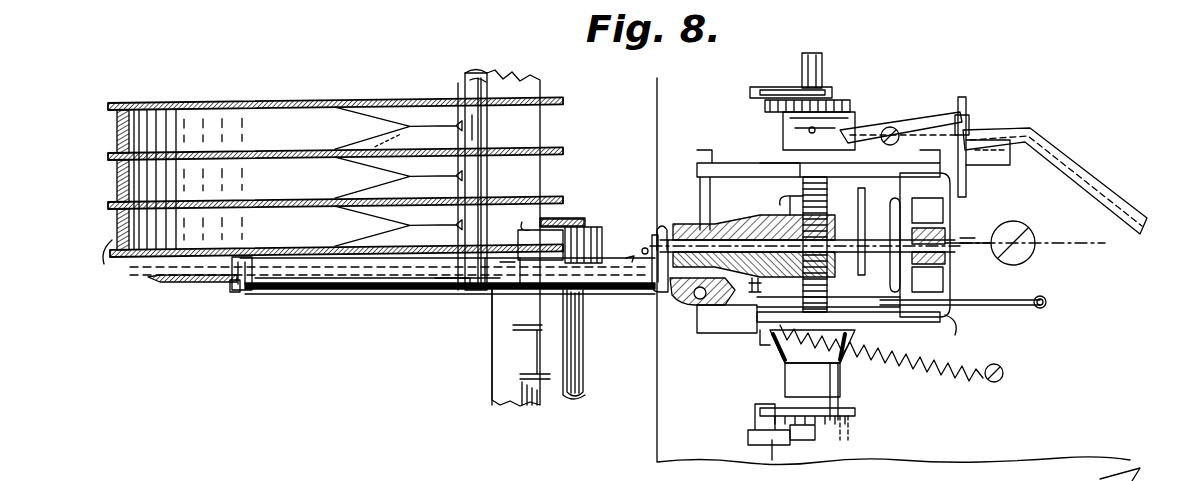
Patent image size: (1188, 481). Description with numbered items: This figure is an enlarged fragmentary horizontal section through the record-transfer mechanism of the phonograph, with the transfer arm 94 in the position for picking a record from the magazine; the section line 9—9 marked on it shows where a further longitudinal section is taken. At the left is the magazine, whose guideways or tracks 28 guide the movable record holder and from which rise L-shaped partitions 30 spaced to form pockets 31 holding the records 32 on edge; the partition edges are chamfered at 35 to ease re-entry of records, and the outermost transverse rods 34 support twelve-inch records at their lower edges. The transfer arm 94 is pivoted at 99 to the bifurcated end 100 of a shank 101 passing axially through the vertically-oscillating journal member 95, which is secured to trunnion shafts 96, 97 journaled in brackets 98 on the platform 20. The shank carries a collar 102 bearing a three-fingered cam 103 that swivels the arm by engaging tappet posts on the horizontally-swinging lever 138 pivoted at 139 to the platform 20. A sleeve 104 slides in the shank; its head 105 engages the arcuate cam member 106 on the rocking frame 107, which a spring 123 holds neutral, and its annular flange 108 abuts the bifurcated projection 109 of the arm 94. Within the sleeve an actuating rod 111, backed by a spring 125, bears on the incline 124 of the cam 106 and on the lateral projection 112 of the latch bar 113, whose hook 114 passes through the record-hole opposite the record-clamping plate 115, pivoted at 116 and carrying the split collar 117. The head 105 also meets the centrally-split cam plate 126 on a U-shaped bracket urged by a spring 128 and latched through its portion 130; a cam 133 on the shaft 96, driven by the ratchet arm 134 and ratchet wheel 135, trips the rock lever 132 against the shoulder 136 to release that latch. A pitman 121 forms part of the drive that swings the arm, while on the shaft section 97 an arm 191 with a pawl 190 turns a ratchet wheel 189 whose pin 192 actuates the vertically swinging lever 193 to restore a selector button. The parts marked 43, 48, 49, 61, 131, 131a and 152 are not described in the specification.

The division plates or partitions 30 is at (112, 257).
The pockets 31 is at (252, 168).
The chamfered upper edges 35 is at (395, 215).
The outermost transverse rods 34 is at (487, 142).
The records 32 is at (563, 108).
The guideways or tracks 28 is at (492, 390).
The post 43 is at (583, 358).
The bracket 48 is at (535, 332).
The latch bar 113 is at (330, 296).
The transfer arm 94 is at (372, 292).
The split collar 117 is at (290, 292).
The record-clamping plate 115 is at (185, 284).
The hook-like projection 114 is at (246, 290).
The pivot of clamping plate 116 is at (235, 292).
The bracket 61 is at (455, 293).
The bracket 49 is at (500, 293).
The lateral projection 112 is at (655, 300).
The spring 125 is at (642, 250).
The section line 9 is at (1097, 247).
The shank 101 is at (690, 215).
The annular flange or head 108 is at (657, 230).
The bifurcated lateral projection 109 is at (660, 240).
The bifurcated end 100 is at (690, 305).
The pivot 99 is at (715, 334).
The bar 131a is at (740, 332).
The journal member 95 is at (770, 290).
The threaded column 131 is at (785, 198).
The sleeve 104 is at (697, 166).
The incline 124 is at (800, 168).
The ratchet arm 134 is at (755, 90).
The ratchet wheel 135 is at (770, 108).
The trunnion shaft 96 is at (822, 60).
The three-fingered cam 103 is at (825, 137).
The cam 133 is at (860, 122).
The shoulder 136 is at (960, 98).
The rock lever 132 is at (966, 118).
The portion of bracket 130 is at (970, 180).
The handle 152 is at (1055, 140).
The head 105 is at (878, 192).
The arcuate cam member 106 is at (950, 260).
The collar 102 is at (885, 285).
The cam plate 126 is at (985, 232).
The lever 138 is at (1025, 225).
The pivot 139 is at (1037, 243).
The actuating rod 111 is at (960, 290).
The pitman or connecting rod 121 is at (961, 334).
The spring 128 is at (920, 368).
The spring 123 is at (775, 362).
The brackets 98 is at (812, 380).
The trunnion shaft section 97 is at (840, 375).
The rocking beam or frame 107 is at (765, 345).
The arm 191 is at (760, 410).
The pawl 190 is at (755, 430).
The pin 192 is at (812, 428).
The ratchet wheel 189 is at (865, 433).
The lever 193 is at (787, 460).
The platform 20 is at (1049, 399).